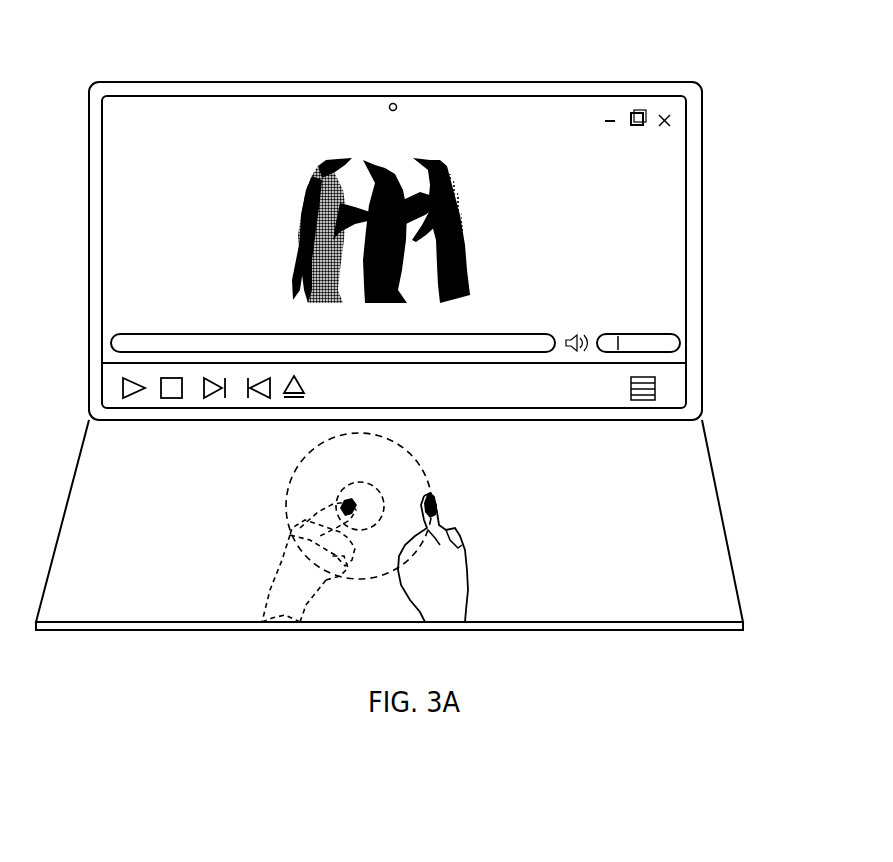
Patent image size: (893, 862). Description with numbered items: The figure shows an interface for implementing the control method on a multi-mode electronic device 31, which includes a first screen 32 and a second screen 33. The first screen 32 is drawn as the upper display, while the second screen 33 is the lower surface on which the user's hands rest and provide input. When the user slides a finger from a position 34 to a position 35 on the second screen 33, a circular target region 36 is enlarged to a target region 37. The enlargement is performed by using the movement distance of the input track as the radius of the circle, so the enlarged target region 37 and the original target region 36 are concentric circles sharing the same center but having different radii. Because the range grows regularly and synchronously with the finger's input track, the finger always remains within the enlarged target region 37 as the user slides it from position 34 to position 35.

The multi-mode electronic device 31 is at (406, 83).
The first screen 32 is at (703, 249).
The second screen 33 is at (707, 501).
The position 34 is at (350, 505).
The position 35 is at (432, 498).
The target region 36 is at (352, 485).
The target region 37 is at (416, 460).